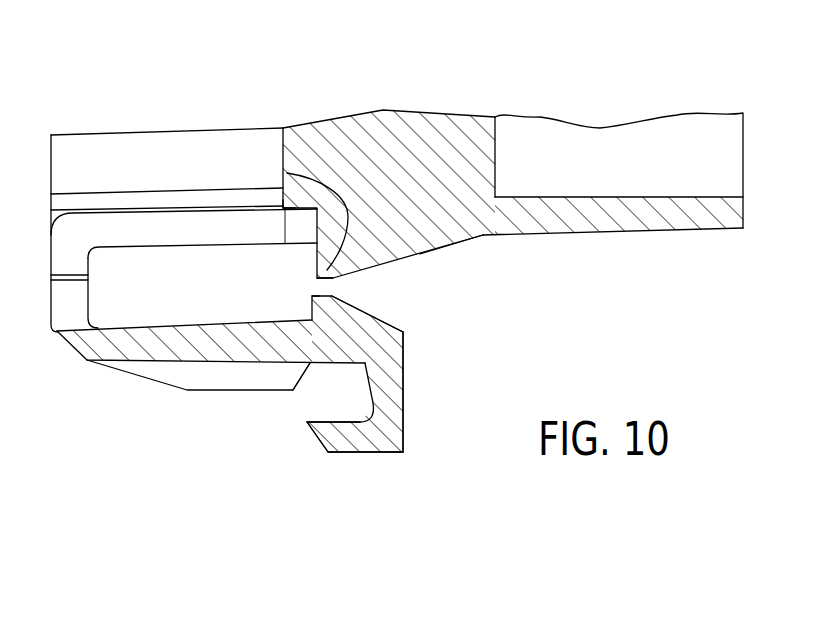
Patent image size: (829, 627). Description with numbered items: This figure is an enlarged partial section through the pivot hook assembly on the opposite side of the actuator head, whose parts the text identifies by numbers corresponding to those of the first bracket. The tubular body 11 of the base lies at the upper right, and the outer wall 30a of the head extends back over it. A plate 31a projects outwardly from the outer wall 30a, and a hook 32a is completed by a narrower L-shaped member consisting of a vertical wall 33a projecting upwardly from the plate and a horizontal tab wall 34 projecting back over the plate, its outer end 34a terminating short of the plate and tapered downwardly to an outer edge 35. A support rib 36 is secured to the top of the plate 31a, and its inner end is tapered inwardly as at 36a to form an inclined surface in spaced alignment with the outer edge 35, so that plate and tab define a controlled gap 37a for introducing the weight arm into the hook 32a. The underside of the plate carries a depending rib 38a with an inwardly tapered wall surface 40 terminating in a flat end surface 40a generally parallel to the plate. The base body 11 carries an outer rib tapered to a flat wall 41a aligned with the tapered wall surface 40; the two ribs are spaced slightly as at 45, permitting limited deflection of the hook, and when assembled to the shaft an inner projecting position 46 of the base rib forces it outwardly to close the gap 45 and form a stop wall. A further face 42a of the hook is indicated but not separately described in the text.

The tubular body 11 is at (663, 242).
The outer wall 30a is at (184, 323).
The plate 31a is at (403, 348).
The hook 32a is at (200, 488).
The vertical wall 33a is at (403, 390).
The horizontal tab wall 34 is at (365, 453).
The outer end 34a is at (315, 438).
The outer edge 35 is at (308, 422).
The support rib 36 is at (152, 375).
The taper 36a is at (300, 378).
The controlled gap 37a is at (291, 414).
The depending rib 38a is at (377, 250).
The inwardly tapered wall surface 40 is at (420, 254).
The flat end surface 40a is at (332, 278).
The flat wall 41a is at (287, 173).
The inclined face 42a is at (369, 303).
The spacing 45 is at (317, 287).
The inner projecting position 46 is at (390, 120).